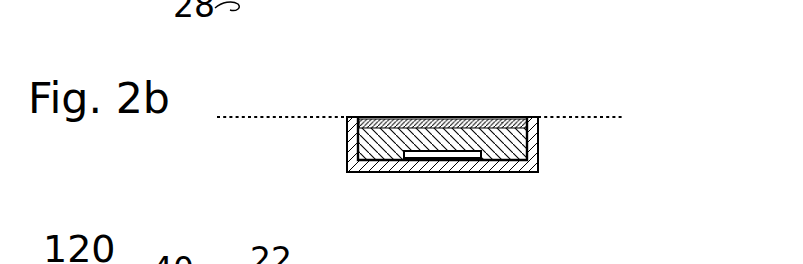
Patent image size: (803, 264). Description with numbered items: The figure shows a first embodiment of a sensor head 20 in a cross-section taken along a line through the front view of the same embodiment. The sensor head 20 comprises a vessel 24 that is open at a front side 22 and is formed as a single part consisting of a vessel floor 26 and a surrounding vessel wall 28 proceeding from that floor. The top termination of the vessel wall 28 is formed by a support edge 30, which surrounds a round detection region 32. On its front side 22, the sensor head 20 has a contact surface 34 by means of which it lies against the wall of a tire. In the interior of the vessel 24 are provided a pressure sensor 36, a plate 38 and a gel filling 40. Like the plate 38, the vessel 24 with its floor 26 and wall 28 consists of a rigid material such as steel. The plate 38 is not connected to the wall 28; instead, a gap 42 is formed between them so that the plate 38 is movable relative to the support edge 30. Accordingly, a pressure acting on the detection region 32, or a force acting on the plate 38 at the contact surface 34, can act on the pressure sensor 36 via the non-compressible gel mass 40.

The sensor head 20 is at (547, 80).
The front side 22 is at (431, 82).
The vessel 24 is at (539, 164).
The vessel floor 26 is at (378, 162).
The vessel wall 28 is at (349, 146).
The support edge 30 is at (351, 117).
The detection region 32 is at (402, 108).
The contact surface 34 is at (476, 117).
The pressure sensor 36 is at (446, 153).
The plate 38 is at (502, 123).
The gel filling 40 is at (520, 140).
The gap 42 is at (358, 117).